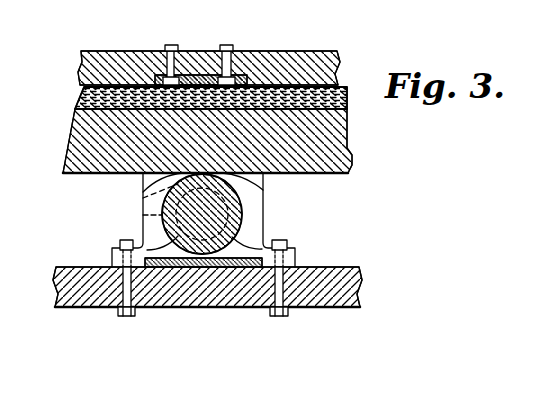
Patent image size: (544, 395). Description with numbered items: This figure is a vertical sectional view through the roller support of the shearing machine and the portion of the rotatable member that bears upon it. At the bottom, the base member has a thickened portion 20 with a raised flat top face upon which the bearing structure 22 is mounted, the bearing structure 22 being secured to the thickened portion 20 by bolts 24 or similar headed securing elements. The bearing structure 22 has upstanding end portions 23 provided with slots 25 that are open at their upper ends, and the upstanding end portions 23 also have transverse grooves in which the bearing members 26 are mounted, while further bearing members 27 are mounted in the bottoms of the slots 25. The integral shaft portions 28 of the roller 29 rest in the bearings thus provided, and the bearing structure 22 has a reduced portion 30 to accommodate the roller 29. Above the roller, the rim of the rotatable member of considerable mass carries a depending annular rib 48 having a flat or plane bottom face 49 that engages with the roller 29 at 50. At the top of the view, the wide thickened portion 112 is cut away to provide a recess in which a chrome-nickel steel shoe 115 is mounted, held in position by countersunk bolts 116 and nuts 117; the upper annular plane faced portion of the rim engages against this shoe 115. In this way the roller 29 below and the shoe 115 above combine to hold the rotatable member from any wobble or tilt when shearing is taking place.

The wide thickened portion 112 is at (263, 57).
The chrome-nickel steel shoe 115 is at (193, 77).
The countersunk bolts 116 is at (169, 60).
The nuts 117 is at (169, 43).
The depending annular rib 48 is at (351, 156).
The flat bottom face 49 is at (347, 173).
The thickened portion 20 is at (300, 277).
The bearing structure 22 is at (295, 250).
The upstanding end portions 23 is at (250, 211).
The bolts 24 is at (121, 243).
The slots 25 is at (262, 181).
The bearing members 26 is at (250, 197).
The bearing members 27 is at (143, 215).
The integral shaft portions 28 is at (145, 200).
The roller 29 is at (112, 259).
The reduced portion 30 is at (206, 264).
The point of engagement 50 is at (150, 192).